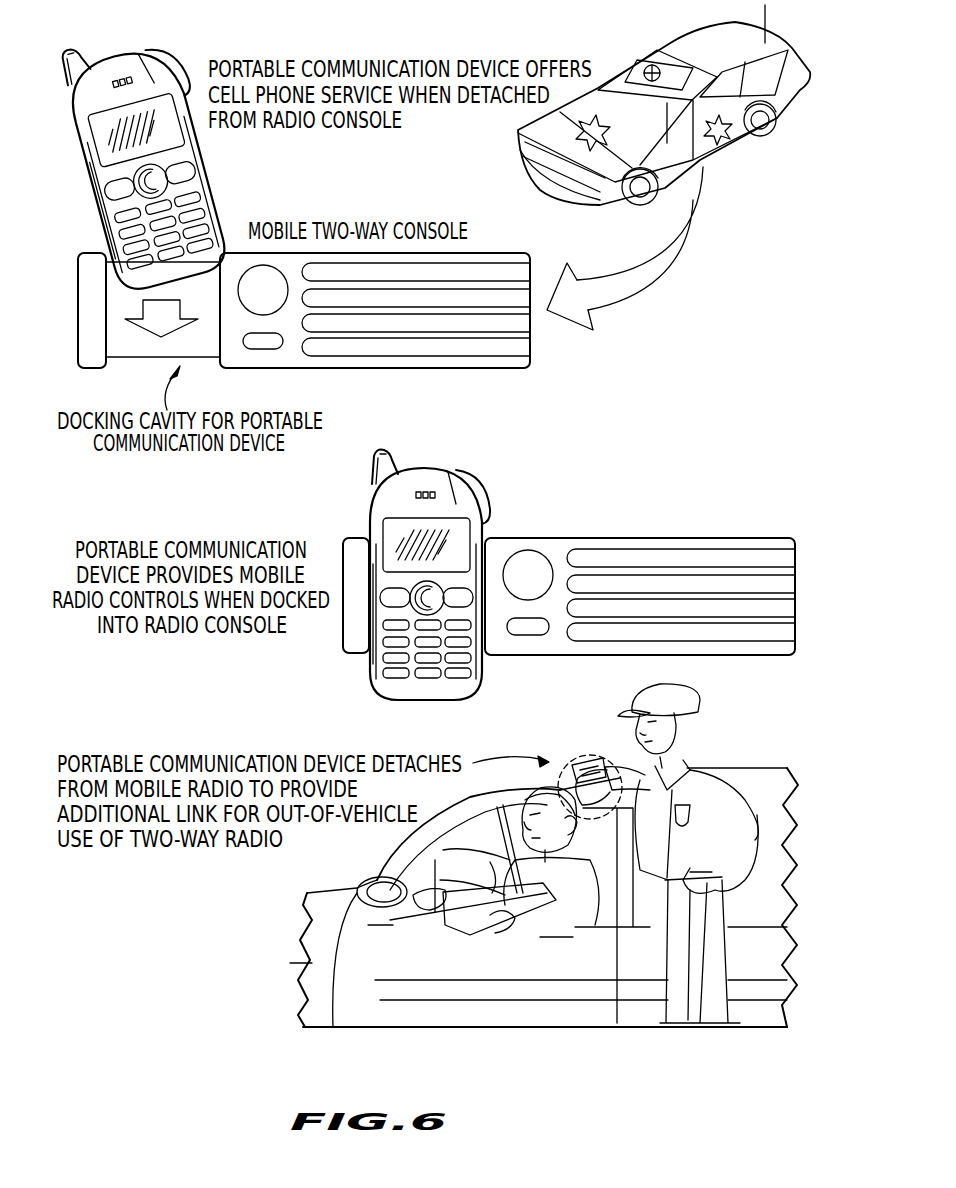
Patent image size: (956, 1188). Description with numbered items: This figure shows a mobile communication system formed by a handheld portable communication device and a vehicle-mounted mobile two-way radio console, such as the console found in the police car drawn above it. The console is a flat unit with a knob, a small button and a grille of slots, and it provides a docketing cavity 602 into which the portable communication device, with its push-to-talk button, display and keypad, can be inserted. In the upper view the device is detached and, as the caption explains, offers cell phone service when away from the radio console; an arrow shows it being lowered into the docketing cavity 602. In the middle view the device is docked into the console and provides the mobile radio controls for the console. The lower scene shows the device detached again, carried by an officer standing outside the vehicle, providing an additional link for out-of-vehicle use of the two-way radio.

The docketing cavity 602 is at (150, 362).